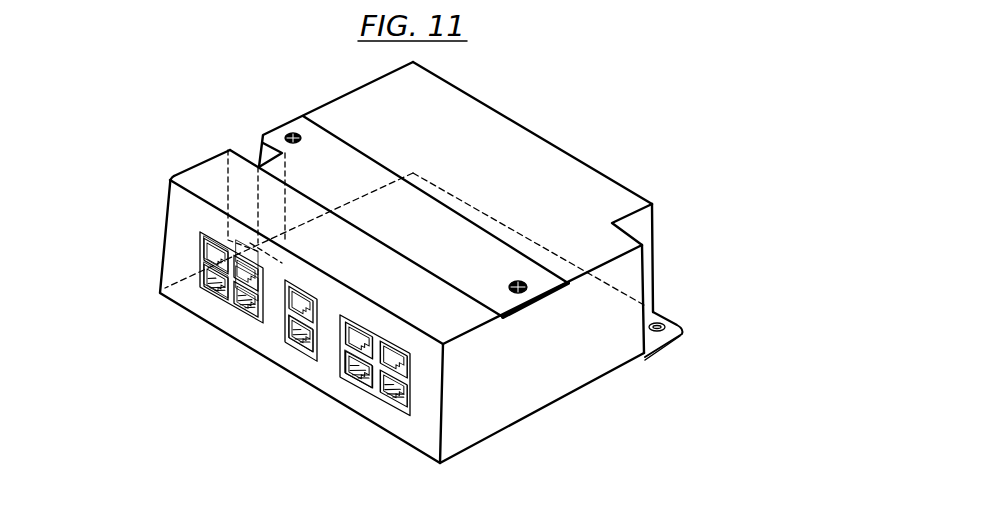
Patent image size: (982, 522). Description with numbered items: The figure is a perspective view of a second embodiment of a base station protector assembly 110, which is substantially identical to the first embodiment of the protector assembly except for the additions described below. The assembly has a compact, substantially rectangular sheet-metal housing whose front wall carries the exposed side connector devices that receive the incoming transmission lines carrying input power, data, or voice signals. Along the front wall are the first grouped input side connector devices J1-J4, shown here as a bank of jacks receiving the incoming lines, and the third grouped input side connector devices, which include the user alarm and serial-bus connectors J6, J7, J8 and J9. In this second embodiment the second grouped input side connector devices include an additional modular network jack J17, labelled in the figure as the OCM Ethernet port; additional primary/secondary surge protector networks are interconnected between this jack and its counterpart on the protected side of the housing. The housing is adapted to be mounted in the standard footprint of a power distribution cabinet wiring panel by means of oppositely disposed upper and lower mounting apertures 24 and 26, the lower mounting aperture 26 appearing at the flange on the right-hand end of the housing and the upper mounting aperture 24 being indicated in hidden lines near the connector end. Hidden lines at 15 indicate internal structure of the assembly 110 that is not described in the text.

The base station protector assembly 110 is at (577, 56).
The upper mounting aperture 24 is at (250, 250).
The circuit board 15 is at (413, 66).
The lower mounting aperture 26 is at (660, 318).
The input side connector device J7 is at (236, 247).
The input side connector device J9 is at (208, 250).
The input side connector device J8 is at (208, 295).
The input side connector device J6 is at (253, 317).
The RJ-45 jack J17 is at (350, 117).
The first grouped input side connector devices J1-J4 is at (367, 392).